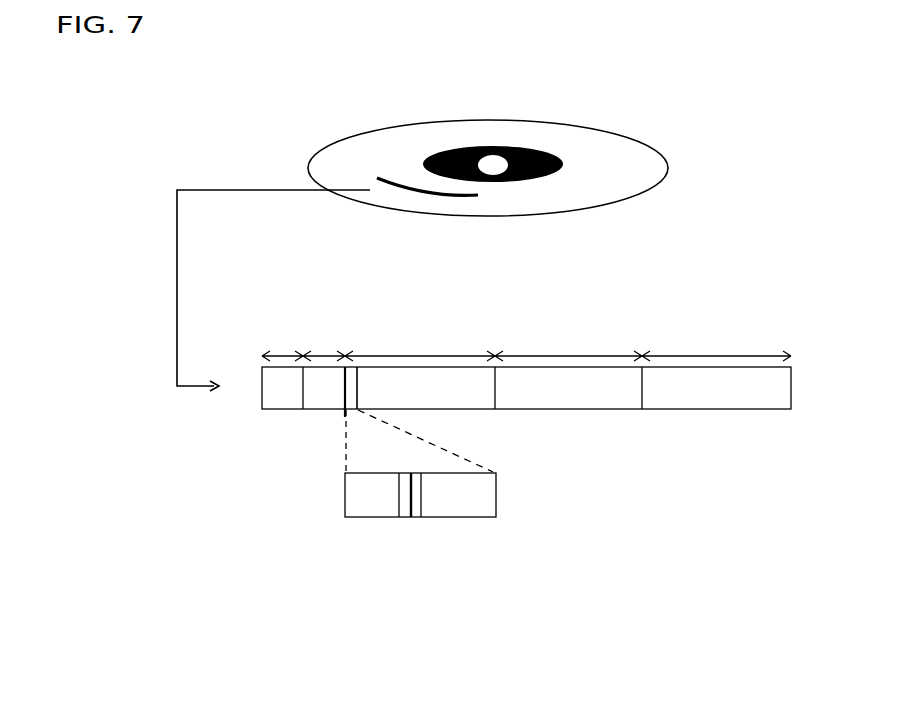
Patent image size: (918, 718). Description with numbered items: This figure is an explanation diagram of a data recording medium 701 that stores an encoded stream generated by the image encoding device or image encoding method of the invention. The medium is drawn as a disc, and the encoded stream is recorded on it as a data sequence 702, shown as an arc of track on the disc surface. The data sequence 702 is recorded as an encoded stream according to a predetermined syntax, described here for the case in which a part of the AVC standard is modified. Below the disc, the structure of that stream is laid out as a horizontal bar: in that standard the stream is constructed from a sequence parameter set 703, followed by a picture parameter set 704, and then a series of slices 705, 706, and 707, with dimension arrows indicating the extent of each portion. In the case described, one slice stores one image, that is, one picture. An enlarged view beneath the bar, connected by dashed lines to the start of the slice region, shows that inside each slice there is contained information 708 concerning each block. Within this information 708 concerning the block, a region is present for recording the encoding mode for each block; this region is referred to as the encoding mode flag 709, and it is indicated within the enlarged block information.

The data recording medium 701 is at (380, 128).
The data sequence 702 is at (408, 192).
The sequence parameter set 703 is at (277, 352).
The picture parameter set 704 is at (325, 352).
The slice 705 is at (422, 352).
The slice 706 is at (569, 352).
The slice 707 is at (716, 352).
The information concerning each block 708 is at (345, 495).
The encoding mode flag 709 is at (415, 518).